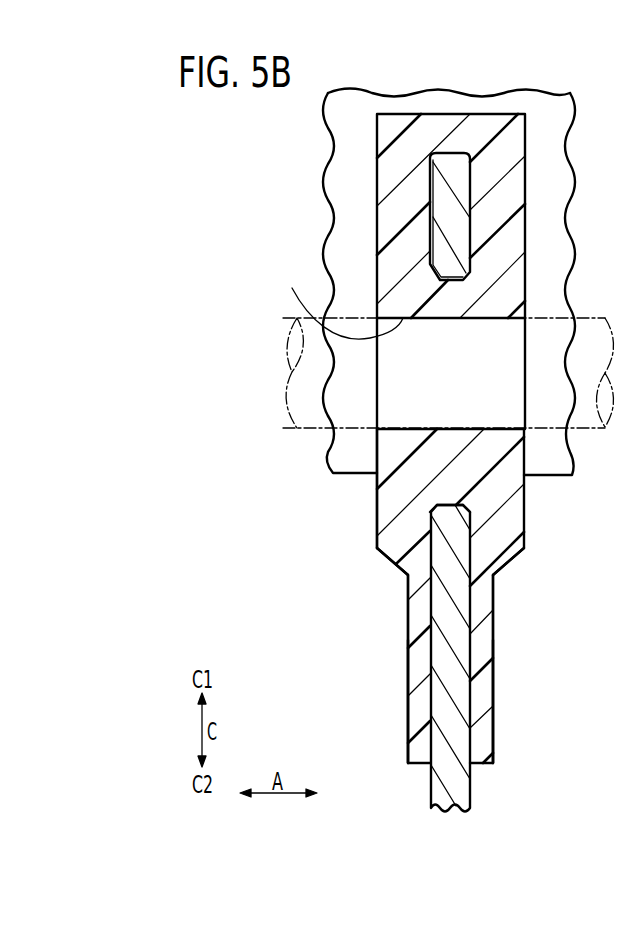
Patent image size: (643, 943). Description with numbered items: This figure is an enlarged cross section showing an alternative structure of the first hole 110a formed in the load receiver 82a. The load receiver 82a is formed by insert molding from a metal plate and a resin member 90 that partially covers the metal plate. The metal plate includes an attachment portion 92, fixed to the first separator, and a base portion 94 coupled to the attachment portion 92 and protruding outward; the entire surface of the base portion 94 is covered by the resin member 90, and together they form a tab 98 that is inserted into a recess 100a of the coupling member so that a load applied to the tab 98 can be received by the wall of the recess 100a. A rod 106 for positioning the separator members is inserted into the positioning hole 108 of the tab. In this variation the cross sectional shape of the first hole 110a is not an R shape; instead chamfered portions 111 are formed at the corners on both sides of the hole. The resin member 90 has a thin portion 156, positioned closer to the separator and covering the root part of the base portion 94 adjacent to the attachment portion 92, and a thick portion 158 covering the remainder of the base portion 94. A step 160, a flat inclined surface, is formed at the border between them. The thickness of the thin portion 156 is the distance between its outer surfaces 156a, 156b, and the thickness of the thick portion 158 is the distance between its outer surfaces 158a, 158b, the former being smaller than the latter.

The load receiver 82a is at (370, 146).
The resin member 90 is at (377, 188).
The base portion 94 is at (452, 218).
The tab 98 is at (375, 331).
The rod 106 is at (292, 322).
The positioning hole 108 is at (335, 301).
The first hole 110a is at (452, 505).
The recess 100a is at (347, 453).
The chamfered portions 111 is at (433, 508).
The thick portion 158 is at (393, 515).
The outer surface of the thick portion 158a is at (527, 537).
The outer surface of the thick portion 158b is at (377, 527).
The step 160 is at (388, 555).
The thin portion 156 is at (408, 660).
The outer surface of the thin portion 156a is at (408, 710).
The outer surface of the thin portion 156b is at (493, 695).
The attachment portion 92 is at (442, 790).